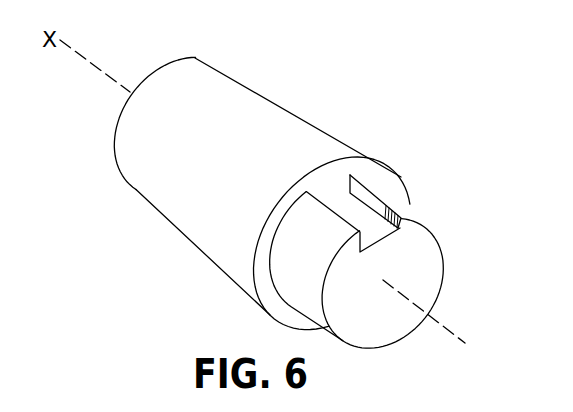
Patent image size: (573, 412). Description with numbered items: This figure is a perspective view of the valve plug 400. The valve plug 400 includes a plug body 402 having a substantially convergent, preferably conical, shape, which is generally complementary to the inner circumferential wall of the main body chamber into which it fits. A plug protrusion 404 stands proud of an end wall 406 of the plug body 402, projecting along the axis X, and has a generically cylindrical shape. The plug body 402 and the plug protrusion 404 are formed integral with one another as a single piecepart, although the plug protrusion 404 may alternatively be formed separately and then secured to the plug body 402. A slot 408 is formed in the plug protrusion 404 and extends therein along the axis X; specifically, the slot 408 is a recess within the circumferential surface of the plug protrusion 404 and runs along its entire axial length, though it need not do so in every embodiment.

The valve plug 400 is at (362, 106).
The plug body 402 is at (160, 172).
The plug protrusion 404 is at (308, 288).
The end wall 406 is at (377, 170).
The slot 408 is at (403, 195).